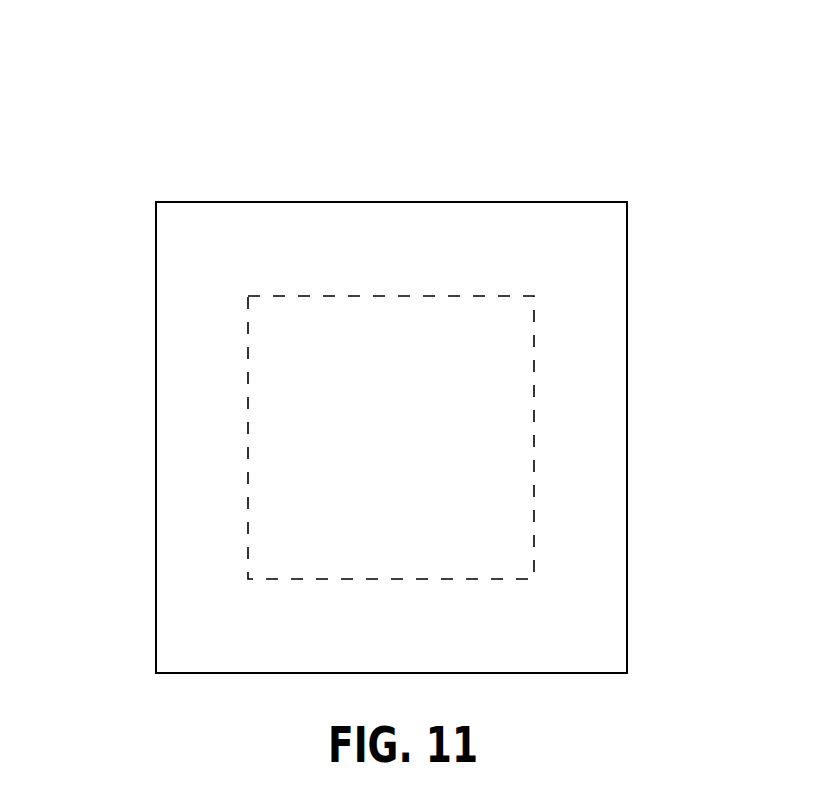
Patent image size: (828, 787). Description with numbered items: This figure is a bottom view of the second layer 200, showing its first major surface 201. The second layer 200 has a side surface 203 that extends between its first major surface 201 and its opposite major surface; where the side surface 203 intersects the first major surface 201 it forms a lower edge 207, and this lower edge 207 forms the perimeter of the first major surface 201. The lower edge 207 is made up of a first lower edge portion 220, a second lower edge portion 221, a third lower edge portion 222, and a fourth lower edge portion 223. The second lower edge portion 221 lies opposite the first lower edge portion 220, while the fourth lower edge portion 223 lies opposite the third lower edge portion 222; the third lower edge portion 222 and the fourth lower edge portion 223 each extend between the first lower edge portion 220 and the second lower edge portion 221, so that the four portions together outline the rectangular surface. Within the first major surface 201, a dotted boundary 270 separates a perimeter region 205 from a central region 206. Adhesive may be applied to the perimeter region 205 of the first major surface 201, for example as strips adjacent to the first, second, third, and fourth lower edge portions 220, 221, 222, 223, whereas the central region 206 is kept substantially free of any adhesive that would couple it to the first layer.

The second layer 200 is at (129, 127).
The first major surface 201 is at (393, 408).
The side surface 203 is at (203, 202).
The perimeter region 205 is at (538, 230).
The central region 206 is at (388, 397).
The lower edge 207 is at (382, 406).
The first lower edge portion 220 is at (526, 673).
The second lower edge portion 221 is at (270, 202).
The third lower edge portion 222 is at (156, 337).
The fourth lower edge portion 223 is at (627, 357).
The dotted boundary 270 is at (248, 497).